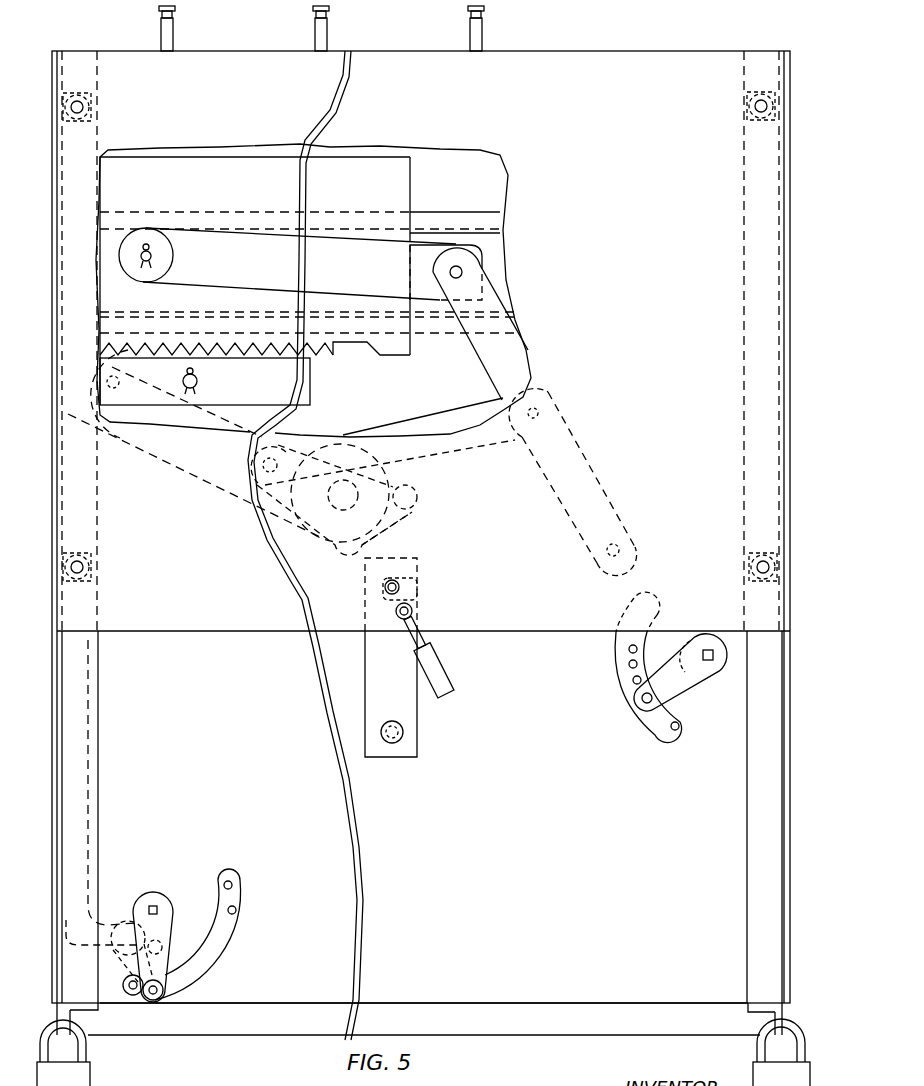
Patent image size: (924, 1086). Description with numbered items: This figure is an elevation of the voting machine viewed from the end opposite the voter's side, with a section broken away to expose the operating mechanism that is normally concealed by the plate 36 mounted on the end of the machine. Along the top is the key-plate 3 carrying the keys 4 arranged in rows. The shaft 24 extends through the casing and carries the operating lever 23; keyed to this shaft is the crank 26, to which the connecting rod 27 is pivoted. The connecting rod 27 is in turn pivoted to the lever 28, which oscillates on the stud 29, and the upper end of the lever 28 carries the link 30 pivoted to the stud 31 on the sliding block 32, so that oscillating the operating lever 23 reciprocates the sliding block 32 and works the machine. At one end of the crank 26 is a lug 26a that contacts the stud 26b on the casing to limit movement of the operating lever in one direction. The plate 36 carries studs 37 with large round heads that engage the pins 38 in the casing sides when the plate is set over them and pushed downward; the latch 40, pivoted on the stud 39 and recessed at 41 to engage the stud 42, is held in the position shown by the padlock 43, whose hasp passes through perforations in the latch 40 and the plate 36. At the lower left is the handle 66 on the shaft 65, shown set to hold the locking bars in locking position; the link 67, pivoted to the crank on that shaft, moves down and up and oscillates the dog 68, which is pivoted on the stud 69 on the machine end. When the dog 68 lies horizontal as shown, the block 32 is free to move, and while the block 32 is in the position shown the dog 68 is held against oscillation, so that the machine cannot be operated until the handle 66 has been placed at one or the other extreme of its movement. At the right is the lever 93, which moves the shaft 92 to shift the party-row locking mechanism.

The key-plate 3 is at (635, 50).
The keys 4 is at (480, 40).
The operating lever 23 is at (193, 460).
The shaft 24 is at (345, 495).
The crank 26 is at (318, 545).
The lug 26a is at (412, 521).
The stud 26b is at (405, 497).
The connecting rod 27 is at (397, 421).
The lever 28 is at (517, 360).
The stud 29 is at (613, 550).
The link 30 is at (420, 253).
The stud 31 is at (148, 255).
The sliding block 32 is at (245, 180).
The plate 36 is at (195, 612).
The studs 37 is at (757, 107).
The pins 38 is at (74, 120).
The stud 39 is at (395, 735).
The latch 40 is at (405, 710).
The recess 41 is at (410, 585).
The stud 42 is at (397, 578).
The padlock 43 is at (410, 612).
The shaft 65 is at (162, 913).
The handle 66 is at (158, 965).
The link 67 is at (80, 828).
The dog 68 is at (150, 390).
The stud 69 is at (197, 381).
The shaft 92 is at (707, 650).
The lever 93 is at (683, 680).